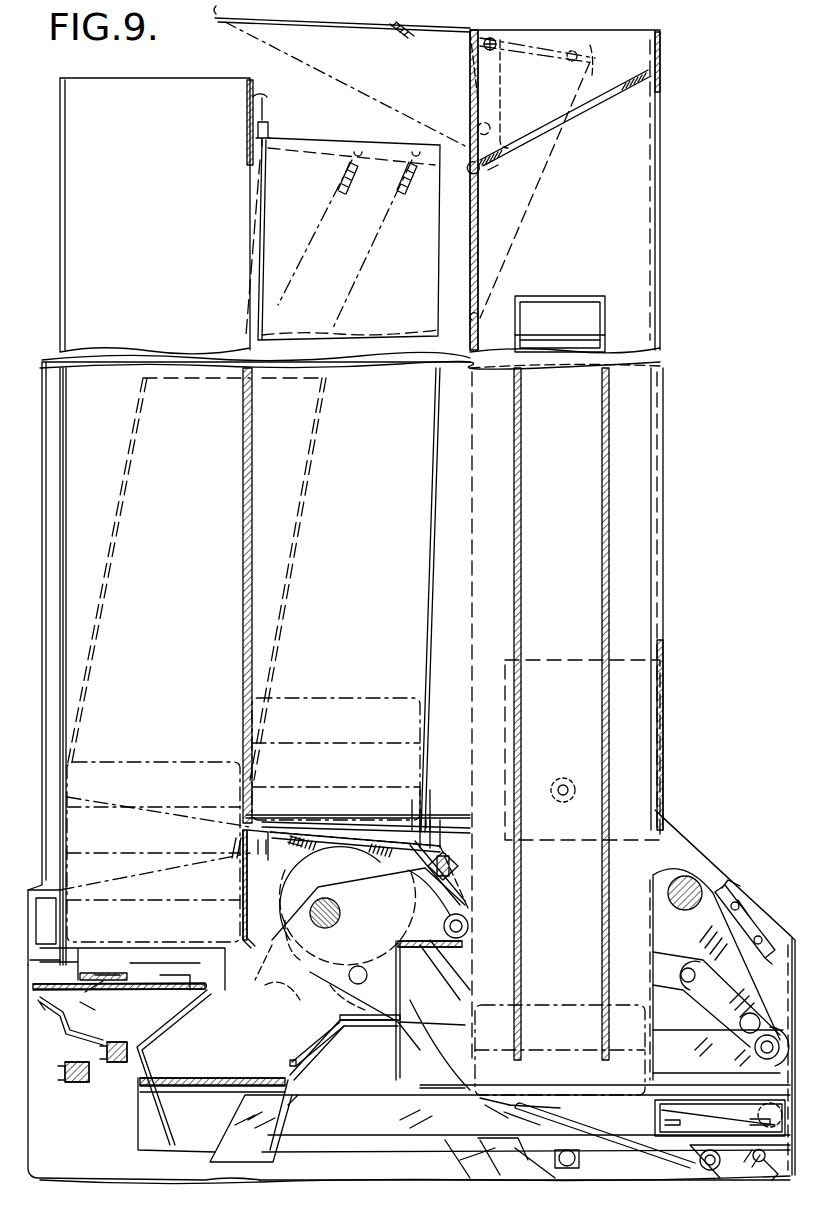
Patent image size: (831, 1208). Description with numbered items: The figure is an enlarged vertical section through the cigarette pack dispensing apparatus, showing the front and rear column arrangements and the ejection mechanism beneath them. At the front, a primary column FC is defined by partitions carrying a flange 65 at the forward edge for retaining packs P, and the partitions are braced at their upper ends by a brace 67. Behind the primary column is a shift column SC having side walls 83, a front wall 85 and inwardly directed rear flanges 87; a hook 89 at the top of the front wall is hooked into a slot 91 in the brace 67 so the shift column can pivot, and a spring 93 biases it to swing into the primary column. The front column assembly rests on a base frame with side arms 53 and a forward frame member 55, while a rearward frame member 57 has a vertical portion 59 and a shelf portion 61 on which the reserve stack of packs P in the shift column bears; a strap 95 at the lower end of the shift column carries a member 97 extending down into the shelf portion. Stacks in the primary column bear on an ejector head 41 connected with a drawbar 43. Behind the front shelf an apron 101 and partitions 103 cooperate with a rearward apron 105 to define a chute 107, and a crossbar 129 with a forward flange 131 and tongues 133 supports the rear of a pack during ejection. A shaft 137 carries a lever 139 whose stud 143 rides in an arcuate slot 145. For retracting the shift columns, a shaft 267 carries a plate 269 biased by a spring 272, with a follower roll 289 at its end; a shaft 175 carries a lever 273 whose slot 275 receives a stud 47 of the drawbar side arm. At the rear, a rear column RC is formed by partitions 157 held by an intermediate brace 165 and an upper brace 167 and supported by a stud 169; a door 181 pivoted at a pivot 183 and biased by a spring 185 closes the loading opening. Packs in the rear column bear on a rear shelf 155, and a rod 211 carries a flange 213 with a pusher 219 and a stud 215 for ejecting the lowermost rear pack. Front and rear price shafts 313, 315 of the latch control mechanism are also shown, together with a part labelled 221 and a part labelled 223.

The flange 65 is at (60, 142).
The primary column FC is at (60, 222).
The brace 67 is at (248, 93).
The slot 91 is at (266, 108).
The hook 89 is at (270, 124).
The shift column SC is at (338, 142).
The spring 93 is at (382, 220).
The door 181 is at (340, 22).
The rear column RC is at (660, 138).
The upper brace 167 is at (660, 42).
The pivot 183 is at (493, 54).
The spring 185 is at (598, 100).
The partition 157 is at (628, 312).
The forward frame member 55 is at (42, 880).
The front wall 85 is at (259, 428).
The side wall 83 is at (424, 488).
The rear flange 87 is at (428, 536).
The pack P is at (152, 765).
The intermediate brace 165 is at (660, 698).
The stud 169 is at (562, 778).
The shelf portion 61 is at (352, 820).
The strap 95 is at (428, 780).
The member 97 is at (235, 843).
The spring 272 is at (368, 870).
The rearward frame member 57 is at (242, 880).
The vertical portion 59 is at (254, 896).
The side arm 53 is at (142, 872).
The shaft 137 is at (336, 922).
The shaft 267 is at (458, 880).
The plate 269 is at (462, 898).
The follower roll 289 is at (468, 930).
The crossbar 129 is at (412, 938).
The forward flange 131 is at (400, 958).
The ejector head 41 is at (170, 962).
The drawbar 43 is at (110, 992).
The apron 101 is at (148, 1038).
The chute 107 is at (226, 1078).
The rearward apron 105 is at (300, 1072).
The tongue 133 is at (342, 1018).
The lever 139 is at (420, 1040).
The arcuate slot 145 is at (290, 982).
The stud 143 is at (358, 984).
The rear price shaft 315 is at (114, 1064).
The front price shaft 313 is at (72, 1084).
The partition 103 is at (130, 1134).
The rod 211 is at (352, 1120).
The shaft 175 is at (690, 876).
The lever 273 is at (743, 900).
The slot 275 is at (748, 1012).
The stud 47 is at (752, 1052).
The flange 213 is at (720, 1118).
The pusher 219 is at (688, 1104).
The stud 215 is at (770, 1106).
The lever 221 is at (555, 1110).
The rear shelf 155 is at (561, 1163).
The wheel 223 is at (727, 1162).